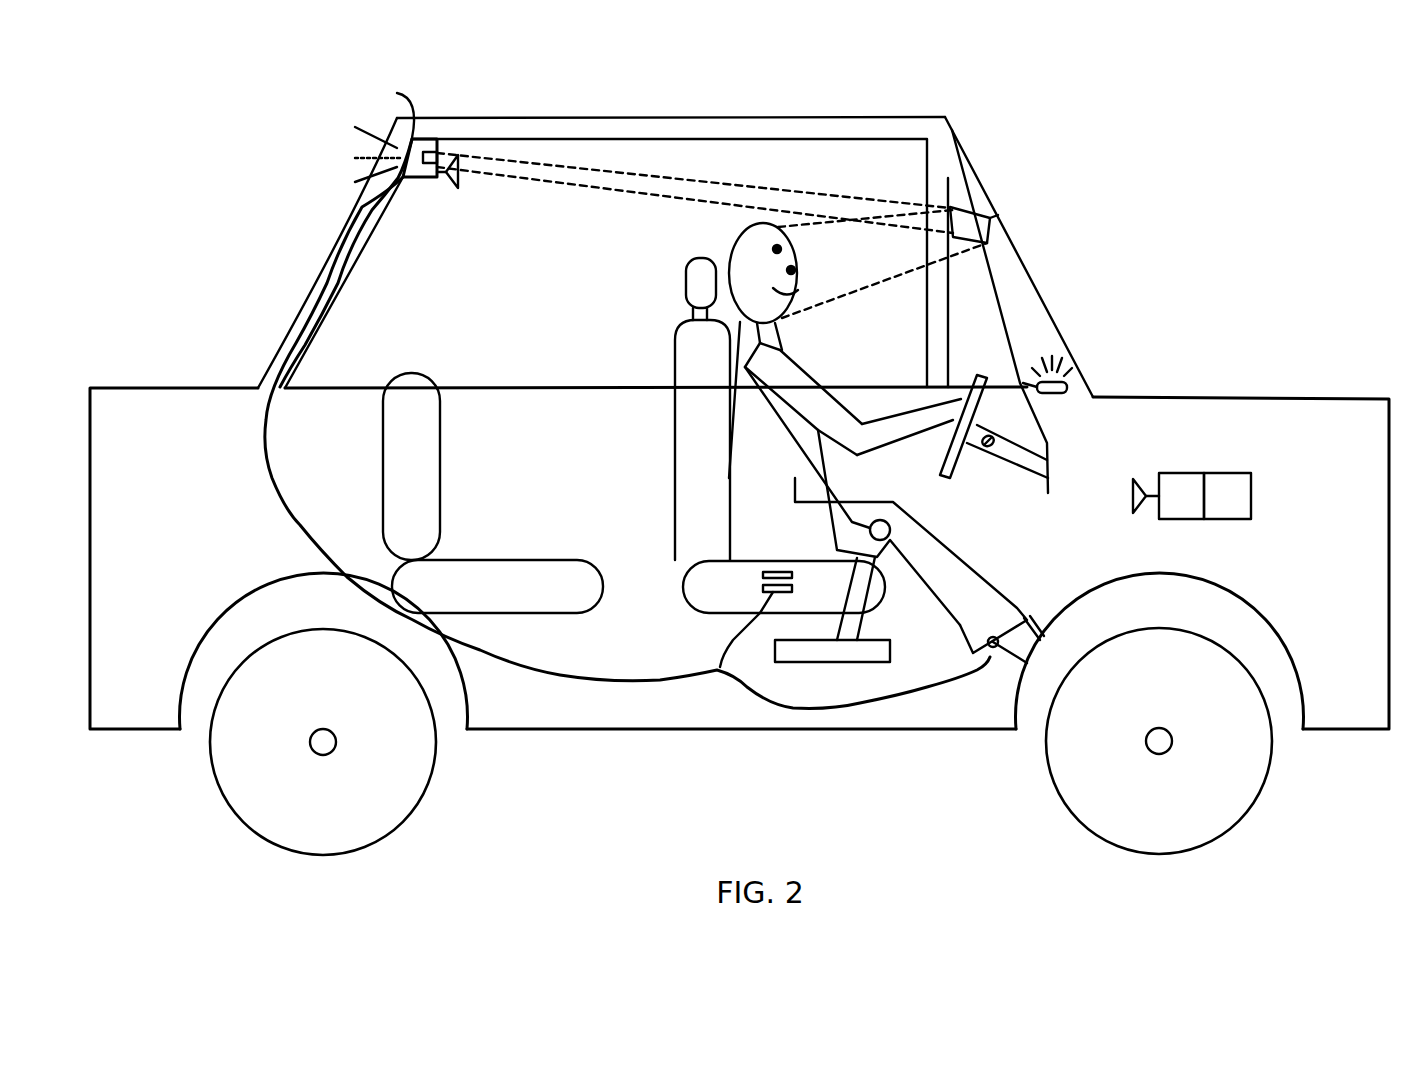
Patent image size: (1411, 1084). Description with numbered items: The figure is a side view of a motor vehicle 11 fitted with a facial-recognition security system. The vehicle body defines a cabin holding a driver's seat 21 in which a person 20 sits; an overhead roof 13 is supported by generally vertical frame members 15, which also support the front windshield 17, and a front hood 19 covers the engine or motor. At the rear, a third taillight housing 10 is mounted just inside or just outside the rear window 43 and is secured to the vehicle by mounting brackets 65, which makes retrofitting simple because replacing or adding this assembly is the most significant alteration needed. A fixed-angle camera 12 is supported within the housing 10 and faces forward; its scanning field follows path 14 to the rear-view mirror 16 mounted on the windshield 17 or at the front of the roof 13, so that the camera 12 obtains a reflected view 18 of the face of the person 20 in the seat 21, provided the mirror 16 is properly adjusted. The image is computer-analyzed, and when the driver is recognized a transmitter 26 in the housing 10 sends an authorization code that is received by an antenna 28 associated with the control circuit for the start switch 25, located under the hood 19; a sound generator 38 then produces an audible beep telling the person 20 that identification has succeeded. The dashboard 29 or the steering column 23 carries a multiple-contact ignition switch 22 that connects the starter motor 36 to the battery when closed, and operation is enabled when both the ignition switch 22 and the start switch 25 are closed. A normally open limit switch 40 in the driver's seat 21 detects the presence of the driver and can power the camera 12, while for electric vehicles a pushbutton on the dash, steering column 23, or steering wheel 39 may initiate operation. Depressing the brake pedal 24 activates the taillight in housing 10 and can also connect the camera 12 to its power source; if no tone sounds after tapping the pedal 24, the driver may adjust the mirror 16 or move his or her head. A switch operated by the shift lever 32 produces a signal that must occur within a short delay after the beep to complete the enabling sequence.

The third taillight housing 10 is at (404, 178).
The motor vehicle 11 is at (140, 534).
The camera 12 is at (430, 165).
The roof 13 is at (720, 117).
The scanning field path 14 is at (585, 168).
The frame members 15 is at (933, 366).
The rear-view mirror 16 is at (985, 229).
The front windshield 17 is at (1047, 337).
The reflected view 18 is at (795, 217).
The front hood 19 is at (1290, 395).
The person 20 is at (737, 263).
The driver's seat 21 is at (683, 444).
The ignition switch 22 is at (988, 448).
The steering column 23 is at (1022, 462).
The brake pedal 24 is at (1035, 630).
The start switch 25 is at (1166, 512).
The transmitter 26 is at (460, 178).
The antenna 28 is at (1133, 500).
The dashboard 29 is at (1027, 400).
The shift lever 32 is at (890, 530).
The starter motor 36 is at (1212, 512).
The sound generator 38 is at (1052, 393).
The steering wheel 39 is at (947, 452).
The limit switch 40 is at (763, 575).
The rear window 43 is at (290, 317).
The mounting brackets 65 is at (384, 109).